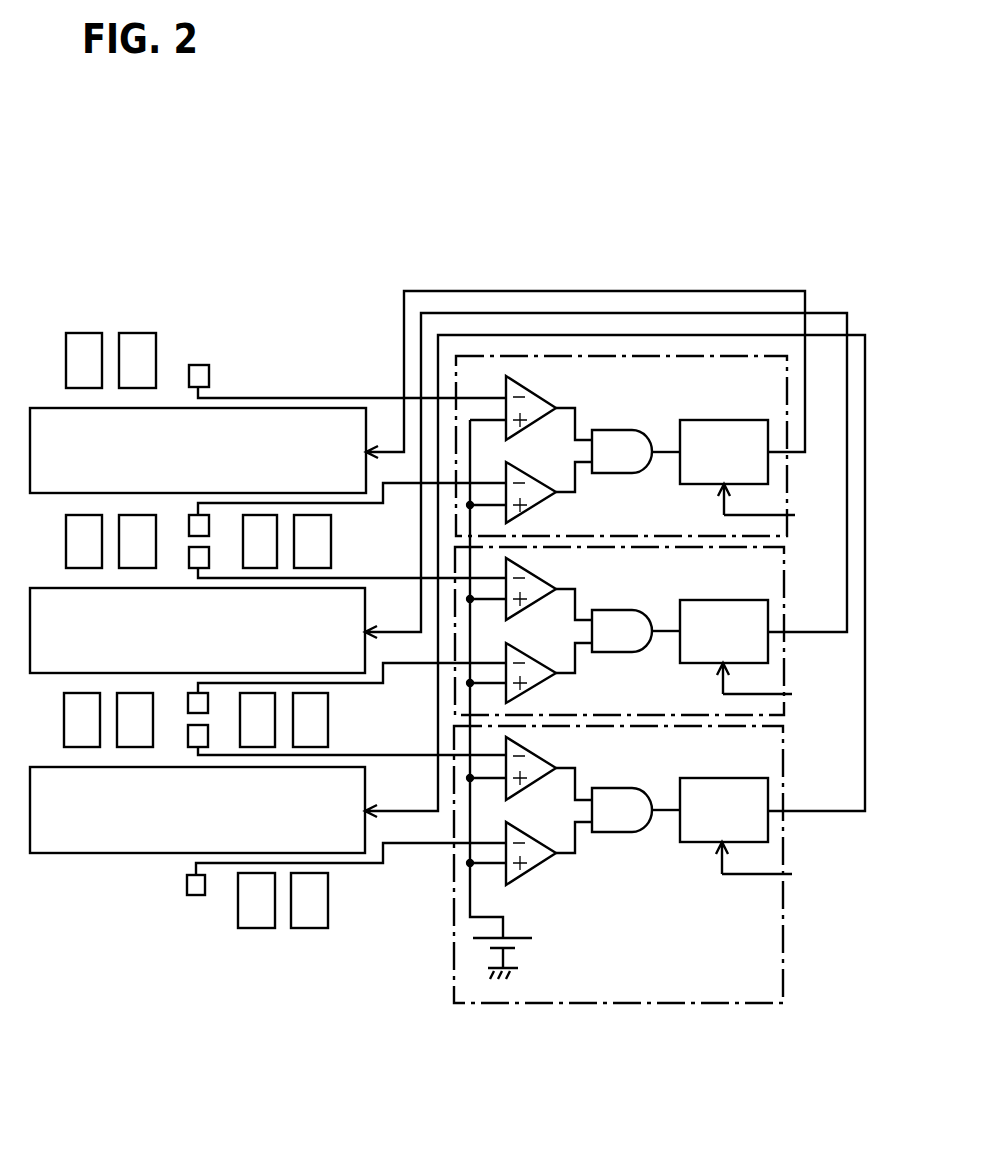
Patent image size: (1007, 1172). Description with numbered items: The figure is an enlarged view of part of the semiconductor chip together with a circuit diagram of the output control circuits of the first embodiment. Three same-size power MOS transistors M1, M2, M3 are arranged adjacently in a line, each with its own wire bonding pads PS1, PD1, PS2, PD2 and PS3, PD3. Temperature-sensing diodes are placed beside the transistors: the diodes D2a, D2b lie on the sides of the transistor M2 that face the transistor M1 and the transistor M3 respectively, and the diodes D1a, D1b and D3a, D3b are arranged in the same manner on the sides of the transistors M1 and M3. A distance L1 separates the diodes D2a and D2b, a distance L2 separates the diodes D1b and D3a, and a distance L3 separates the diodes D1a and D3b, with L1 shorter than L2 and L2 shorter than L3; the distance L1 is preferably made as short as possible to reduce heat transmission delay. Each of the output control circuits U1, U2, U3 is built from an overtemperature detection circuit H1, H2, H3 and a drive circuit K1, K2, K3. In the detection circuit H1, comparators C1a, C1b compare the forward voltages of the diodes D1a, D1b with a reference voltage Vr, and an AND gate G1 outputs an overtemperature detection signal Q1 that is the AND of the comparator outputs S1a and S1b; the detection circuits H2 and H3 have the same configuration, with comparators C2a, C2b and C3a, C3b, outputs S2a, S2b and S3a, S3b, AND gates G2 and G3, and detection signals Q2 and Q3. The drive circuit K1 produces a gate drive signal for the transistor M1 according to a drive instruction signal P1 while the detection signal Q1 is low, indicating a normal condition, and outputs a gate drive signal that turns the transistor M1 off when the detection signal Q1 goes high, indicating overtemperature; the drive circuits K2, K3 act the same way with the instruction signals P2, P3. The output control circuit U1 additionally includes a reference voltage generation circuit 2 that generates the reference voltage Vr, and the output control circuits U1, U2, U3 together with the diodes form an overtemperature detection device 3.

The reference voltage generation circuit 2 is at (534, 946).
The overtemperature detection device 3 is at (470, 268).
The power MOS transistor M1 is at (52, 767).
The power MOS transistor M2 is at (52, 588).
The power MOS transistor M3 is at (52, 408).
The wire bonding pad PS1 is at (108, 720).
The wire bonding pad PS2 is at (111, 541).
The wire bonding pad PS3 is at (111, 360).
The wire bonding pad PD1 is at (283, 900).
The wire bonding pad PD2 is at (284, 720).
The wire bonding pad PD3 is at (287, 541).
The diode D1a is at (196, 895).
The diode D1b is at (208, 738).
The diode D2a is at (193, 692).
The diode D2b is at (198, 574).
The diode D3a is at (209, 523).
The diode D3b is at (221, 338).
The distance L1 is at (177, 540).
The distance L2 is at (223, 537).
The distance L3 is at (185, 388).
The output control circuit U1 is at (785, 760).
The output control circuit U2 is at (787, 600).
The output control circuit U3 is at (787, 538).
The overtemperature detection circuit H1 is at (599, 748).
The overtemperature detection circuit H2 is at (604, 571).
The overtemperature detection circuit H3 is at (603, 382).
The comparator C1a is at (530, 843).
The comparator C1b is at (531, 760).
The comparator C2a is at (532, 655).
The comparator C2b is at (540, 582).
The comparator C3a is at (532, 483).
The comparator C3b is at (540, 398).
The comparator output S1a is at (582, 846).
The comparator output S1b is at (581, 779).
The comparator output S2a is at (572, 672).
The comparator output S2b is at (581, 599).
The comparator output S3a is at (574, 491).
The comparator output S3b is at (575, 413).
The AND gate G1 is at (622, 810).
The AND gate G2 is at (622, 631).
The AND gate G3 is at (622, 451).
The overtemperature detection signal Q1 is at (660, 807).
The overtemperature detection signal Q2 is at (660, 628).
The overtemperature detection signal Q3 is at (665, 448).
The drive circuit K1 is at (735, 778).
The drive circuit K2 is at (735, 600).
The drive circuit K3 is at (737, 420).
The drive instruction signal P1 is at (766, 865).
The drive instruction signal P2 is at (767, 686).
The drive instruction signal P3 is at (769, 506).
The reference voltage Vr is at (500, 699).